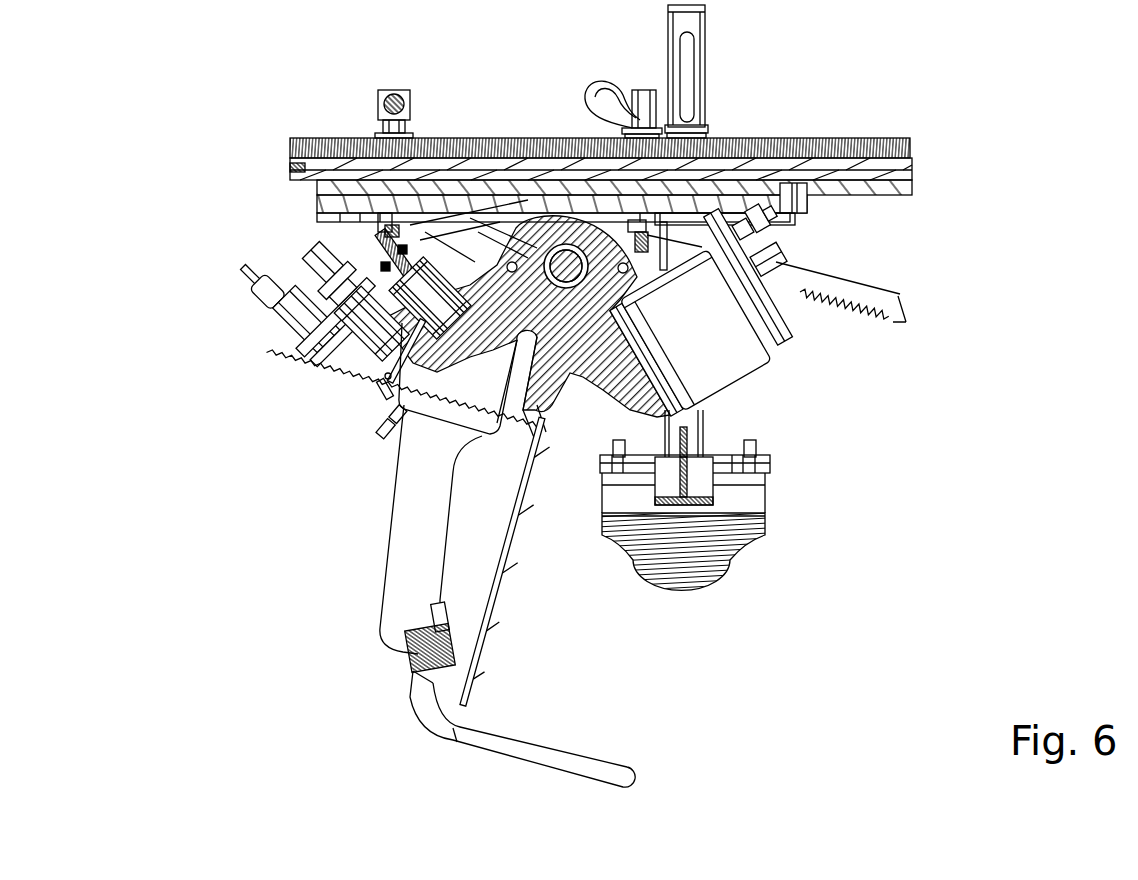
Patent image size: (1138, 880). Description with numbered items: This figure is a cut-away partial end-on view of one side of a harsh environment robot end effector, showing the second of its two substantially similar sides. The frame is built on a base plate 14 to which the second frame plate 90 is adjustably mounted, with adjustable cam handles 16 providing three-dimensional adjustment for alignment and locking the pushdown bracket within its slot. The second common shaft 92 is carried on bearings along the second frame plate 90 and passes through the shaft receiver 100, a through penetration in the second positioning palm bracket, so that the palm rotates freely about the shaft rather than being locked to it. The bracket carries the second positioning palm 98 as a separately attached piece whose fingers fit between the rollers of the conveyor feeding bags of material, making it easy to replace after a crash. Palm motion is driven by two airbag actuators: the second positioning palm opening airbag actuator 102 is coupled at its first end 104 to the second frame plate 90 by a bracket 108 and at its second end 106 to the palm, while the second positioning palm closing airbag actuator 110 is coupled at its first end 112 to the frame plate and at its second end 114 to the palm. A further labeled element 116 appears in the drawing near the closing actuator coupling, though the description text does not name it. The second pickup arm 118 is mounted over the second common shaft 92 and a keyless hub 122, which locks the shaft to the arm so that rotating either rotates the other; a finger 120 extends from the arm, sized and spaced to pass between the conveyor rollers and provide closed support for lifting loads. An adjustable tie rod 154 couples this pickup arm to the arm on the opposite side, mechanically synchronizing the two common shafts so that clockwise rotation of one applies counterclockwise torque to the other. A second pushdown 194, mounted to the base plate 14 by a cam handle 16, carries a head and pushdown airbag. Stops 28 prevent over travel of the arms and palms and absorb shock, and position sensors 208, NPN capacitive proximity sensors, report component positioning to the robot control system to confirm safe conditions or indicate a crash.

The base plate 14 is at (865, 140).
The adjustable cam handle 16 is at (372, 80).
The stop 28 is at (444, 311).
The second frame plate 90 is at (806, 203).
The second common shaft 92 is at (573, 266).
The second positioning palm 98 is at (490, 642).
The shaft receiver 100 is at (553, 256).
The keyless hub 122 is at (534, 149).
The second positioning palm opening airbag actuator 102 is at (710, 342).
The first end 104 is at (752, 301).
The second end 106 is at (652, 362).
The bracket 108 is at (788, 320).
The second positioning palm closing airbag actuator 110 is at (465, 406).
The first end 112 is at (395, 378).
The second end 114 is at (528, 401).
The link pin 116 is at (388, 376).
The second pickup arm 118 is at (428, 536).
The finger 120 is at (597, 757).
The adjustable tie rod 154 is at (852, 282).
The second pushdown 194 is at (797, 512).
The position sensor 208 is at (260, 302).